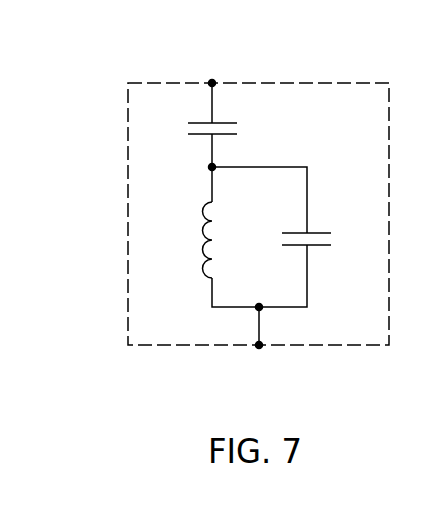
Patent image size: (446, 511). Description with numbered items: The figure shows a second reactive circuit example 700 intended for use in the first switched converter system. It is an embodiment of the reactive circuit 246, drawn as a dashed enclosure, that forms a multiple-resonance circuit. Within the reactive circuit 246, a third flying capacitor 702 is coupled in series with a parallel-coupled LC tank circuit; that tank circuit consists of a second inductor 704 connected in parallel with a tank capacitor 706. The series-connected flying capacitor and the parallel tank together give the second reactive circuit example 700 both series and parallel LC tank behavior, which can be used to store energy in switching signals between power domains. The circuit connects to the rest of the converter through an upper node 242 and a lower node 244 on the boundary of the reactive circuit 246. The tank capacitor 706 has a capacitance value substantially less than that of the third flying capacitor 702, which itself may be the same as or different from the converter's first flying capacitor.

The second reactive circuit example 700 is at (148, 41).
The first terminal node 242 is at (212, 79).
The second terminal node 244 is at (258, 350).
The reactive circuit 246 is at (260, 83).
The third flying capacitor 702 is at (223, 122).
The second inductor 704 is at (203, 208).
The tank capacitor 706 is at (318, 232).